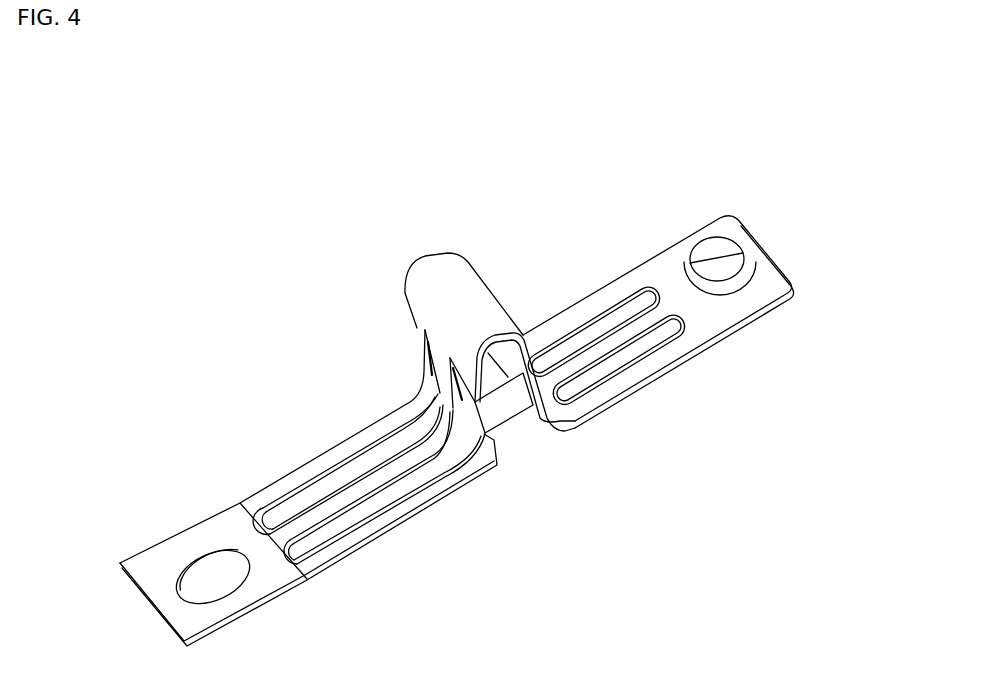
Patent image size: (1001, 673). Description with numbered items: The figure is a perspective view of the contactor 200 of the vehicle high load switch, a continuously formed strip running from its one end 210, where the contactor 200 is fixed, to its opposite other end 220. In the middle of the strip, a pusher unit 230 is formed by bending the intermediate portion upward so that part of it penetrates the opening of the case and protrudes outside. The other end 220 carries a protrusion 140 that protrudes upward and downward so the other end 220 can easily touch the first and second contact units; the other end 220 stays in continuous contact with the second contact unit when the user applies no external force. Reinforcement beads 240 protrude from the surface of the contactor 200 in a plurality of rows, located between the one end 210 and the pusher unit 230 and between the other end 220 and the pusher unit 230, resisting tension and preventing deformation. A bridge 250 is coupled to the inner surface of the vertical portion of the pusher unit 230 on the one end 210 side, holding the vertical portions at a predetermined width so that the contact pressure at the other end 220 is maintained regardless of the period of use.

The contactor 200 is at (243, 275).
The one end 210 is at (168, 597).
The other end 220 is at (770, 283).
The pusher unit 230 is at (432, 276).
The reinforcement bead 240 is at (360, 517).
The bridge 250 is at (502, 412).
The protrusion 140 is at (713, 247).